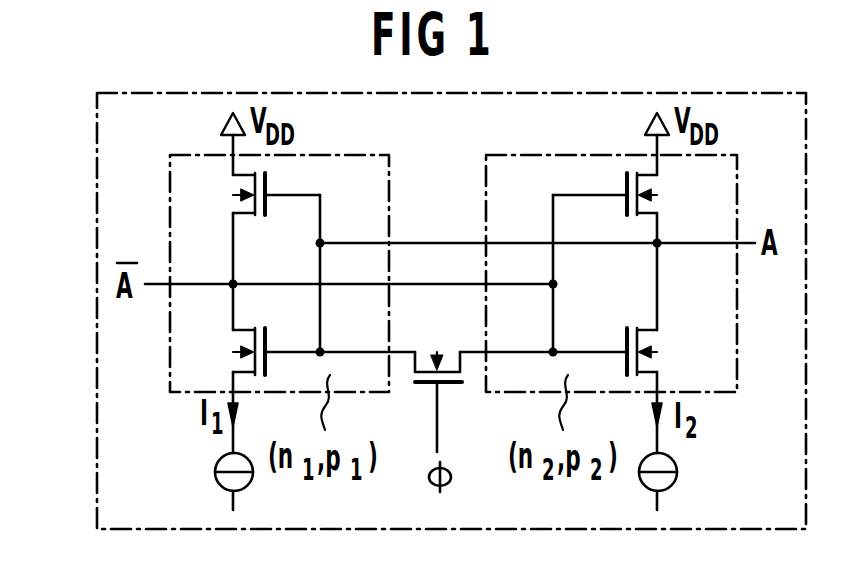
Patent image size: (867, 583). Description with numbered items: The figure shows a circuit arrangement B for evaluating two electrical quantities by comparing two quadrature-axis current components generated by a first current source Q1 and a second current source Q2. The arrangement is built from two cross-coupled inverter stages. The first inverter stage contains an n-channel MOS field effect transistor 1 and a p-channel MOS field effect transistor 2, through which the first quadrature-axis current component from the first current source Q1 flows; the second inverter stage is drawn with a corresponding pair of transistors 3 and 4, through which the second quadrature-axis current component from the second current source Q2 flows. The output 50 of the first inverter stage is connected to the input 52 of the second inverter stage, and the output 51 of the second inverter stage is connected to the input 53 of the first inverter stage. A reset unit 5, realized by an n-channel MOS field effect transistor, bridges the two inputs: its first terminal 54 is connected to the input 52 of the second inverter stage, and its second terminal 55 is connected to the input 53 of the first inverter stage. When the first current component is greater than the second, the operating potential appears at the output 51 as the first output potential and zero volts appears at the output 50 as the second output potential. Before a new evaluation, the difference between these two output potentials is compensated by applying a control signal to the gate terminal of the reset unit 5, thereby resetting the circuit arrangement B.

The n-channel MOS field effect transistor 1 is at (242, 359).
The p-channel MOS field effect transistor 2 is at (242, 202).
The second P-channel MOS transistor 3 is at (650, 187).
The second N-channel MOS transistor 4 is at (648, 362).
The reset unit 5 is at (447, 387).
The output of the first inverter stage 50 is at (235, 280).
The output of the second inverter stage 51 is at (660, 247).
The input of the second inverter stage 52 is at (555, 284).
The input of the first inverter stage 53 is at (322, 241).
The first terminal of the reset unit 54 is at (551, 350).
The second terminal of the reset unit 55 is at (322, 350).
The circuit arrangement B is at (97, 400).
The first current source Q1 is at (215, 472).
The second current source Q2 is at (678, 473).